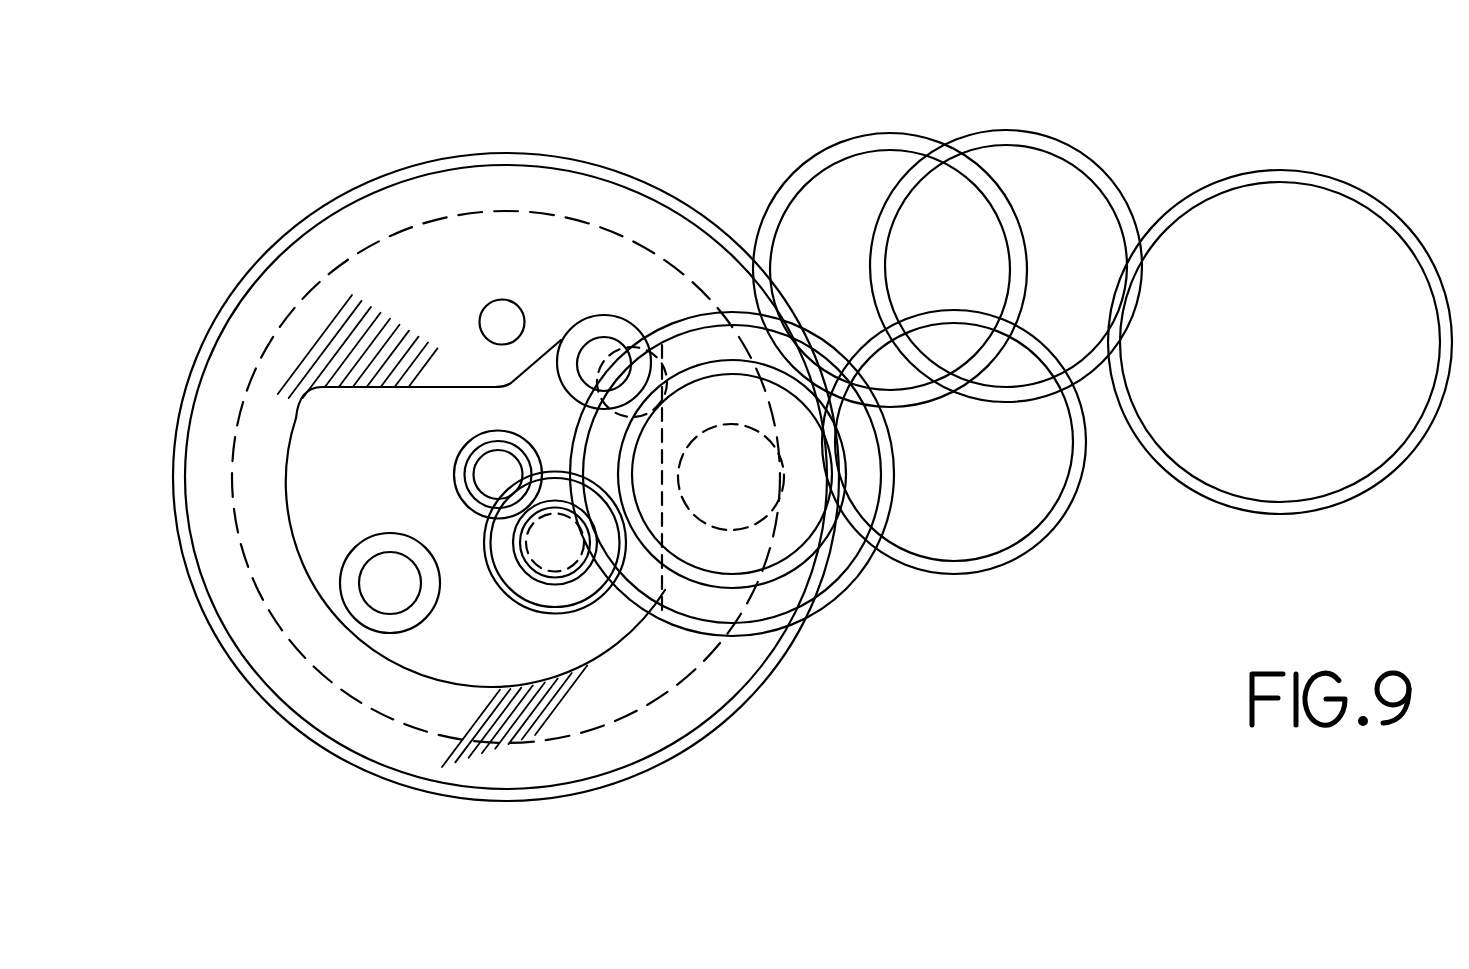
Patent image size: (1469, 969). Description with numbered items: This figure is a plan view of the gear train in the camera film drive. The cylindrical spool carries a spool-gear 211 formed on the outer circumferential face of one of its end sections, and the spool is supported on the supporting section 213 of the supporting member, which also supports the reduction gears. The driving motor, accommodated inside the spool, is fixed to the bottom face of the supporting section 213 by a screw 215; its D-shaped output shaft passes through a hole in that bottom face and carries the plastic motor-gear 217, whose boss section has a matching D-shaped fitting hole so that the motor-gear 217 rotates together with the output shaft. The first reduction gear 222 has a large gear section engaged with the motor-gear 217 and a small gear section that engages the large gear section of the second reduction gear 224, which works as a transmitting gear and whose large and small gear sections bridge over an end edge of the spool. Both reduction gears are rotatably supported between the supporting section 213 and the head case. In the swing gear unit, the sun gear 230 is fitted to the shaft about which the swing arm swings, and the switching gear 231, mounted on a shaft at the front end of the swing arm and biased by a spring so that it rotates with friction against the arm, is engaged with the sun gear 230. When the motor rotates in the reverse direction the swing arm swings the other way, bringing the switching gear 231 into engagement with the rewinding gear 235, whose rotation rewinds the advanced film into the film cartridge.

The spool-gear 211 is at (647, 187).
The supporting section 213 is at (520, 227).
The screw 215 is at (365, 615).
The motor-gear 217 is at (485, 518).
The first reduction gear 222 is at (578, 610).
The second reduction gear 224 is at (818, 612).
The sun gear 230 is at (975, 575).
The switching gear 231 is at (1013, 207).
The rewinding gear 235 is at (1247, 177).